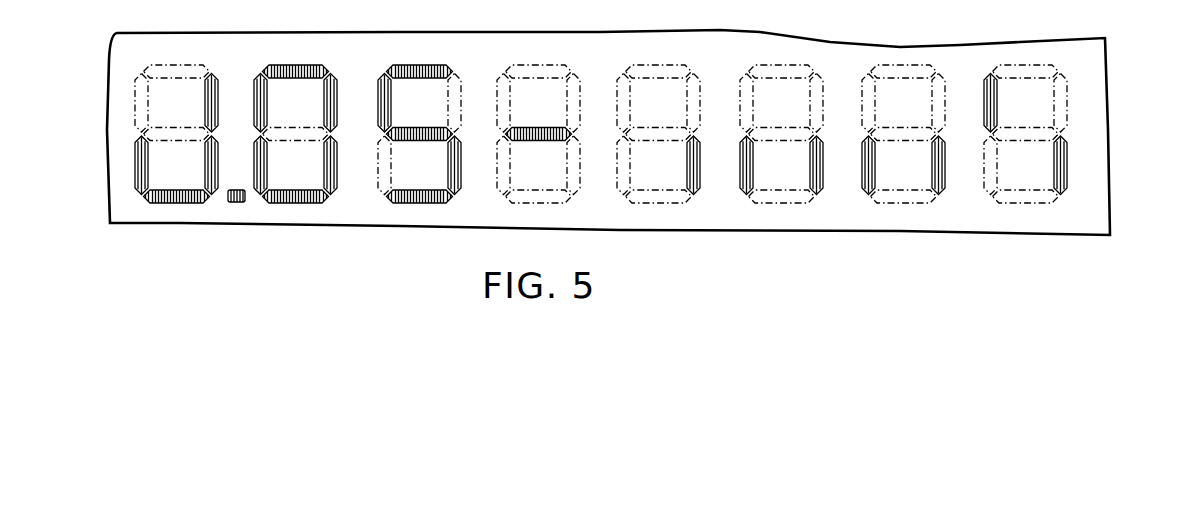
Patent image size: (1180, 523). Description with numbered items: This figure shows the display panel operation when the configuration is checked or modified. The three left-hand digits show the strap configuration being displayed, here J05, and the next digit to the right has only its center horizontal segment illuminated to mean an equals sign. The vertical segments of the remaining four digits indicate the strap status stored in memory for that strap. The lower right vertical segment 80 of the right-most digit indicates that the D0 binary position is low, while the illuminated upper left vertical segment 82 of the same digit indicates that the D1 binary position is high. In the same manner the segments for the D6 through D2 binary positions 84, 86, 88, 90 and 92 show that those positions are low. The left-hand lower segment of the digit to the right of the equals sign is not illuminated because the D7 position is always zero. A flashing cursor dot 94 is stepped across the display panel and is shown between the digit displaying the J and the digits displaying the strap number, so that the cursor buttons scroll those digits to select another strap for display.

The lower right vertical segment 80 is at (1066, 180).
The upper left vertical segment 82 is at (986, 107).
The D6 binary position segment 84 is at (945, 172).
The D5 binary position segment 86 is at (867, 196).
The D4 binary position segment 88 is at (820, 186).
The D3 binary position segment 90 is at (746, 188).
The D2 binary position segment 92 is at (698, 178).
The flashing cursor dot 94 is at (242, 203).